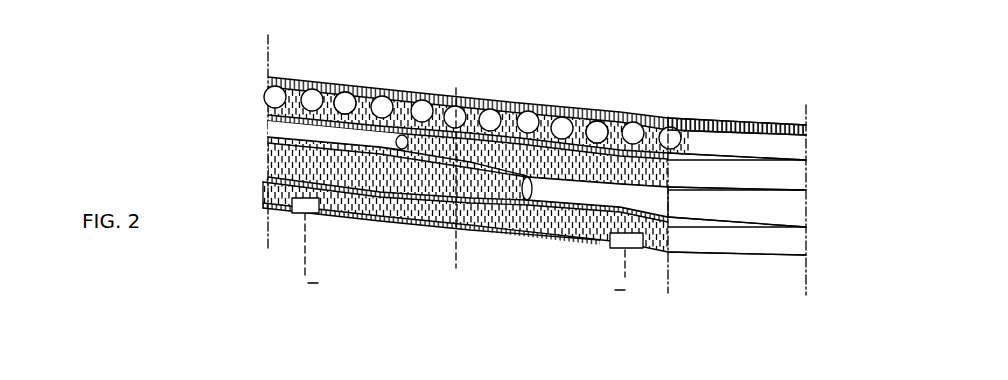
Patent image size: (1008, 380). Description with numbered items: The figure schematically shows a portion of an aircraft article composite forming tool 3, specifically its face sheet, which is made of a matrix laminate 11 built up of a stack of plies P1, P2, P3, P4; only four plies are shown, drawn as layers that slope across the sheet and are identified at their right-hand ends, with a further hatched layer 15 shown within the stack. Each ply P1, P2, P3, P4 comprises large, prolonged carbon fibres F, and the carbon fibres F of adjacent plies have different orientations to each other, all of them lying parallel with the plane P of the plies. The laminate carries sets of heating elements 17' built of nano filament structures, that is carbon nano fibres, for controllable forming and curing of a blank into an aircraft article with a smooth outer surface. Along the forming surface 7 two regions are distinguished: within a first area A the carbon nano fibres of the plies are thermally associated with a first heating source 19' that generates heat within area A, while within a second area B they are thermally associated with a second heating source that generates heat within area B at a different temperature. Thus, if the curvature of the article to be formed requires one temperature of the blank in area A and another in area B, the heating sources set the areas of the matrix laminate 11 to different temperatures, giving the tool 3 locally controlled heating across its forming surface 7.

The matrix laminate 11 is at (193, 107).
The forming surface 7 is at (405, 92).
The lower carrier layer 15 is at (358, 228).
The set of heating elements 17' is at (358, 261).
The first heating source 19' is at (290, 245).
The aircraft article composite forming tool 3 is at (838, 313).
The carbon fibres F is at (270, 130).
The first area A is at (360, 85).
The second area B is at (593, 106).
The plane of the plies P is at (706, 96).
The ply P1 is at (822, 134).
The ply P2 is at (822, 177).
The ply P3 is at (822, 215).
The ply P4 is at (822, 251).